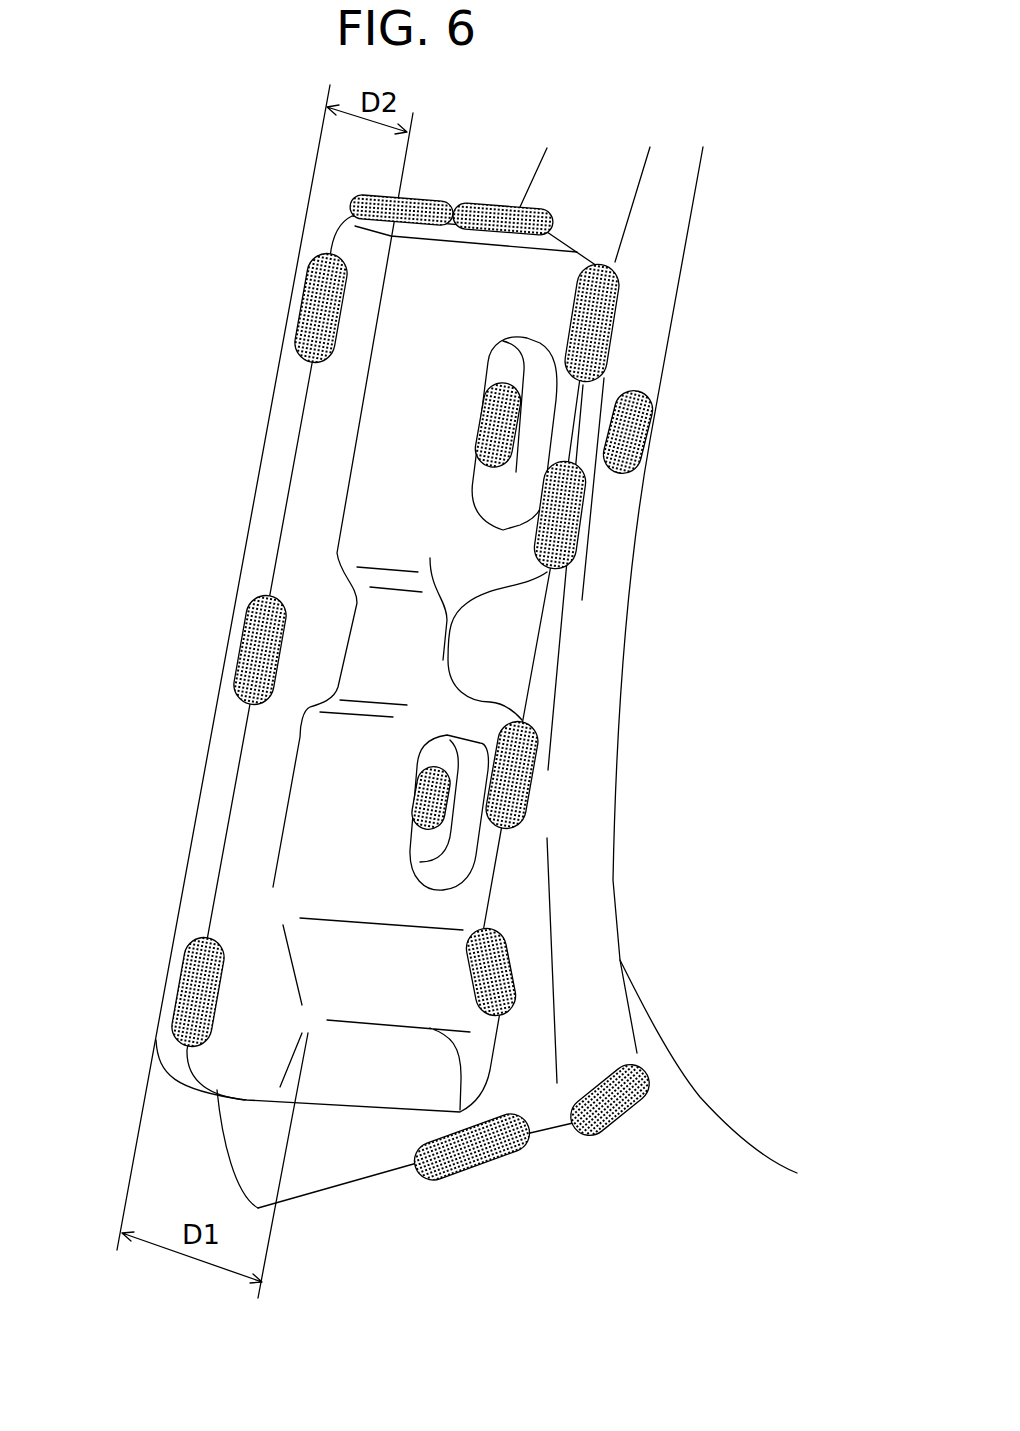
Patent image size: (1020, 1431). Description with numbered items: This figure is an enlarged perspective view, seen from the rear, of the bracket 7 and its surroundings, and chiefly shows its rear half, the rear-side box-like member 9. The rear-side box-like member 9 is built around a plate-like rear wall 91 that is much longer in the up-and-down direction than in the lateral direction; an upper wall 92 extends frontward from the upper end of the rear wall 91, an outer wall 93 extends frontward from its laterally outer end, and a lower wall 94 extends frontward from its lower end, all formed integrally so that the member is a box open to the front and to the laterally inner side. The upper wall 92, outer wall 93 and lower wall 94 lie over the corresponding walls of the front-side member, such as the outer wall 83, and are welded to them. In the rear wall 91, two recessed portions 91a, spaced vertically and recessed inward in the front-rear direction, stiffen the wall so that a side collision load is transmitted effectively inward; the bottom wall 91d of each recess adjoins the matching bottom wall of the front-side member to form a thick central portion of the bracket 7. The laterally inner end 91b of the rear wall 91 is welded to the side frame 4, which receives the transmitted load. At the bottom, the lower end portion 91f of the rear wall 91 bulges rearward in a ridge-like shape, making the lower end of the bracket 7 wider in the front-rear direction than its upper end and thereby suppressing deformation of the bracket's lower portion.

The bracket 7 is at (223, 201).
The outer wall 83 is at (215, 785).
The rear-side box-like member 9 is at (374, 1120).
The outer wall 93 is at (247, 847).
The lower wall 94 is at (245, 1090).
The side frame 4 is at (219, 1150).
The rear wall 91 is at (540, 293).
The recessed portion 91a is at (551, 406).
The laterally inner end 91b is at (520, 570).
The bottom wall 91d is at (488, 482).
The lower end portion 91f is at (478, 1162).
The upper wall 92 is at (475, 233).